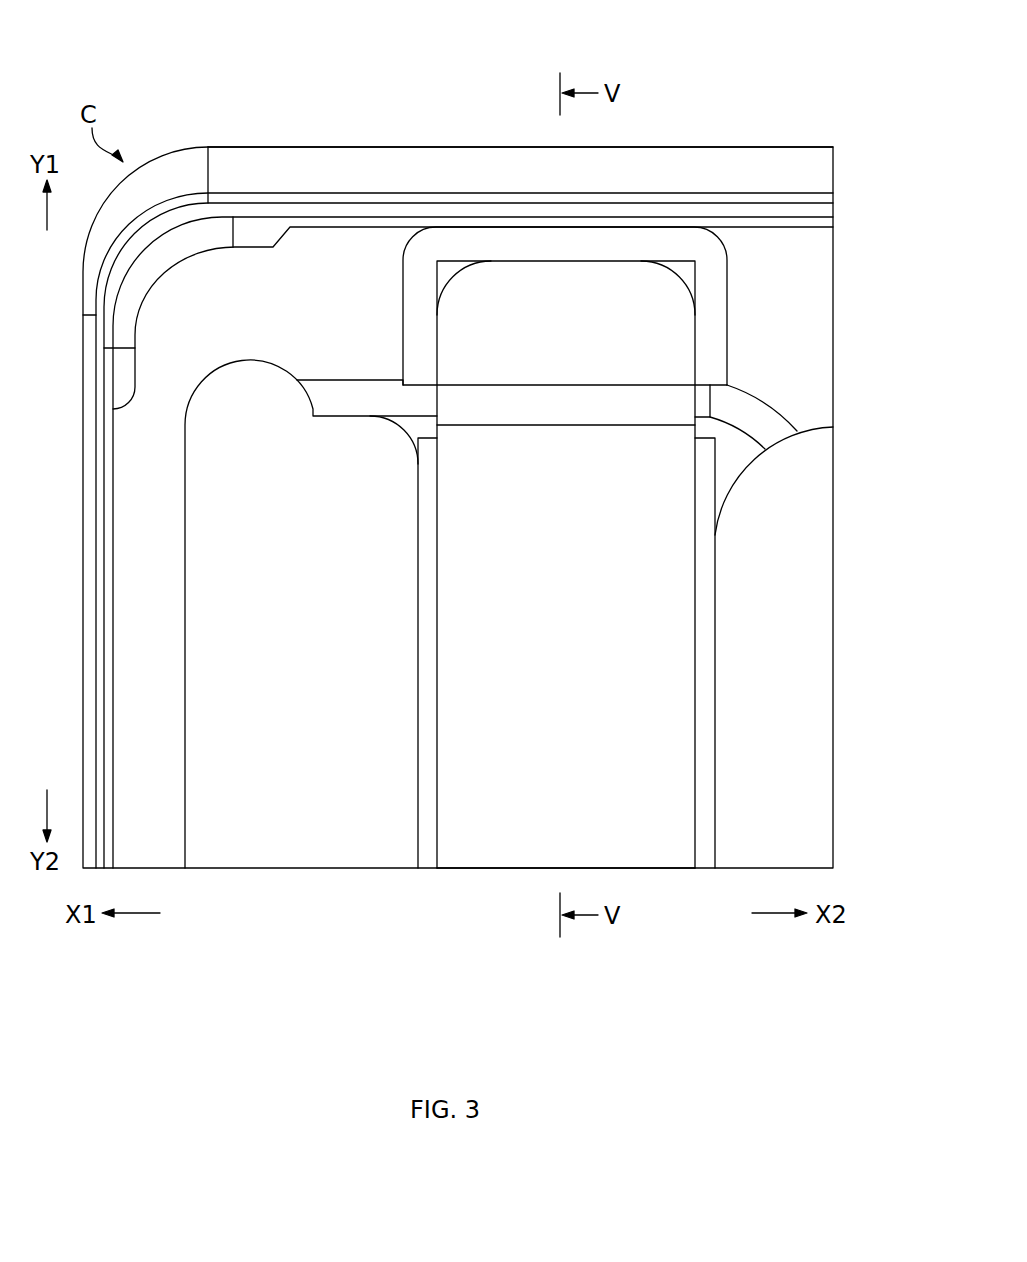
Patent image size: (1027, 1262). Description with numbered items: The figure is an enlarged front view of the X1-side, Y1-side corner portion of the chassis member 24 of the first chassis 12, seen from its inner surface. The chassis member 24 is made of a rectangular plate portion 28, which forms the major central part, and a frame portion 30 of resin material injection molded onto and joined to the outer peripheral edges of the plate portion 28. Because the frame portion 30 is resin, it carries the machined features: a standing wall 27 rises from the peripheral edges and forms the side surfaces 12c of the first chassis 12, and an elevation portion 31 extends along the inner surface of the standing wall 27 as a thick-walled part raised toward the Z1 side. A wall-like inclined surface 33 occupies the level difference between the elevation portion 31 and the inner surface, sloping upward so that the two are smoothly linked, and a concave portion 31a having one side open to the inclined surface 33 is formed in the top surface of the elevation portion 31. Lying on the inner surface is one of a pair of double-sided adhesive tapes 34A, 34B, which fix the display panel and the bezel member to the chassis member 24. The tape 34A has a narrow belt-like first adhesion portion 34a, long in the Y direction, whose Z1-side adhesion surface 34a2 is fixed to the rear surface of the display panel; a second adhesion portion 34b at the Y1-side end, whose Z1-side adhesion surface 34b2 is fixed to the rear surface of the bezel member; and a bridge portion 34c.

The first chassis 12 is at (82, 31).
The side surfaces 12c is at (478, 145).
The standing wall 27 is at (393, 160).
The elevation portion 31 is at (320, 248).
The concave portion 31a is at (635, 248).
The inclined surface 33 is at (323, 400).
The bridge portion 34c is at (495, 407).
The second adhesion portion 34b is at (683, 564).
The Z1-side adhesion surface 34b2 is at (665, 310).
The frame portion 30 is at (806, 352).
The plate portion 28 is at (802, 481).
The chassis member 24 is at (820, 441).
The double-sided adhesive tape 34A is at (678, 653).
The double-sided adhesive tape 34B is at (707, 626).
The first adhesion portion 34a is at (566, 904).
The Z1-side adhesion surface 34a2 is at (566, 920).